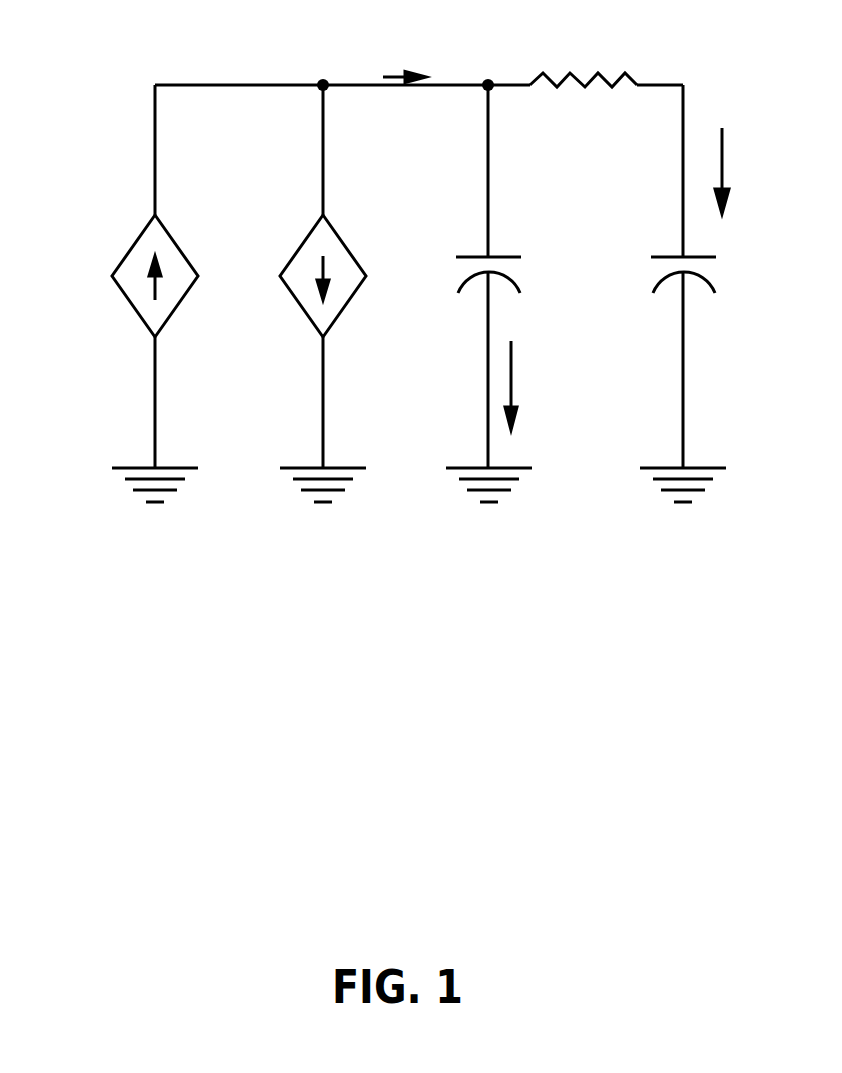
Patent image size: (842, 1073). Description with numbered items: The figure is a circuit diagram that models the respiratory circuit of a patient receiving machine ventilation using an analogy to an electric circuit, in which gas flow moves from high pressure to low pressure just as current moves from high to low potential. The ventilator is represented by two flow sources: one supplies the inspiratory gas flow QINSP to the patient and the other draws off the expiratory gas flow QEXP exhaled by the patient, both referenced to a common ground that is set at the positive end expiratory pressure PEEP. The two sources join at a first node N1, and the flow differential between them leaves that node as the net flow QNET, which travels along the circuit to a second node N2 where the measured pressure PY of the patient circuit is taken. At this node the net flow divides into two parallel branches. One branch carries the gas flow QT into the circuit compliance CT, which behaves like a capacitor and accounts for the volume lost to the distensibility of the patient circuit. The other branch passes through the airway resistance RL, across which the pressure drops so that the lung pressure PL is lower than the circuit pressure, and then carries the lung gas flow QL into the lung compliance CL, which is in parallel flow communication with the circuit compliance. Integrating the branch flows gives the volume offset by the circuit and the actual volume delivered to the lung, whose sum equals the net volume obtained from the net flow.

The inspiratory gas flow QINSP is at (130, 274).
The expiratory gas flow QEXP is at (304, 274).
The node N1 is at (329, 71).
The net flow QNET is at (401, 62).
The node N2 is at (494, 71).
The measured pressure at the patient circuit PY is at (484, 91).
The airway resistance RL is at (583, 65).
The lung pressure PL is at (687, 82).
The lung gas flow QL is at (740, 171).
The circuit compliance CT is at (484, 259).
The lung compliance CL is at (679, 259).
The patient circuit gas flow QT is at (528, 385).
The positive end expiratory pressure PEEP is at (70, 489).